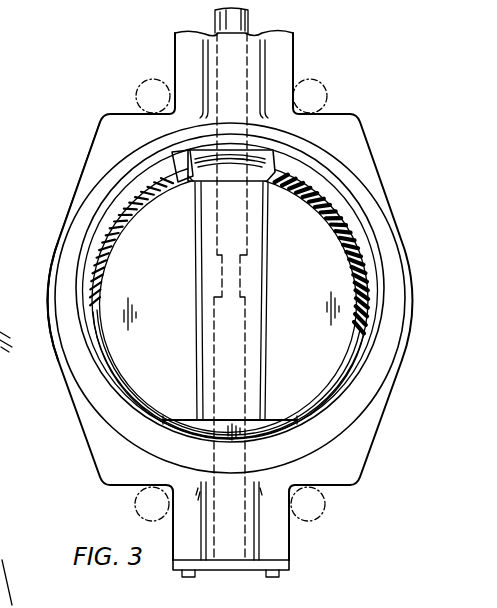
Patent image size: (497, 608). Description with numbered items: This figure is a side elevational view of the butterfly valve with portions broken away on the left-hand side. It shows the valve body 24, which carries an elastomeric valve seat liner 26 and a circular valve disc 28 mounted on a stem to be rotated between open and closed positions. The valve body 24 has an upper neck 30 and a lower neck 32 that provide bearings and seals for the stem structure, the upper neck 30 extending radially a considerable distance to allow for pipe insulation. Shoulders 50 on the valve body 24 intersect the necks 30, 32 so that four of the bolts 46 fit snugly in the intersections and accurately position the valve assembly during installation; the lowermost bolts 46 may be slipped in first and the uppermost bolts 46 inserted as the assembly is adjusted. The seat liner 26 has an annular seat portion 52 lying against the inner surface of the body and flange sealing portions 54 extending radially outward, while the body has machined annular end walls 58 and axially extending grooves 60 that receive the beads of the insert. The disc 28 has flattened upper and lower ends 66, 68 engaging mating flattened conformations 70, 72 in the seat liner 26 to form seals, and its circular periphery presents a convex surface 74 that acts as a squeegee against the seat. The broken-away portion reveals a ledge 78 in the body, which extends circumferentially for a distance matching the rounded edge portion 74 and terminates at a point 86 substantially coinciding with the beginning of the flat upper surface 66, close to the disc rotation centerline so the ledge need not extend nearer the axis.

The valve body 24 is at (110, 128).
The valve seat liner 26 is at (350, 382).
The valve disc 28 is at (153, 354).
The upper neck 30 is at (280, 70).
The lower neck 32 is at (273, 540).
The bolts 46 is at (142, 86).
The shoulders 50 is at (108, 112).
The annular seat portion 52 is at (110, 245).
The flange sealing portions 54 is at (100, 366).
The annular end walls 58 is at (65, 258).
The axially extending grooves 60 is at (86, 232).
The flattened upper end 66 is at (190, 181).
The flattened lower end 68 is at (191, 417).
The flattened conformation 70 is at (238, 176).
The flattened conformation 72 is at (231, 423).
The convex surface 74 is at (163, 201).
The ledge 78 is at (88, 196).
The termination point 86 is at (172, 165).